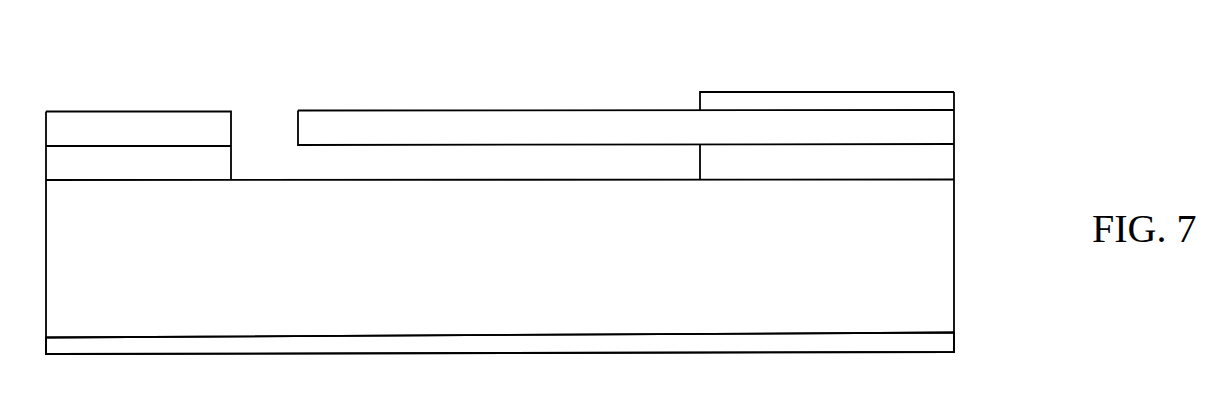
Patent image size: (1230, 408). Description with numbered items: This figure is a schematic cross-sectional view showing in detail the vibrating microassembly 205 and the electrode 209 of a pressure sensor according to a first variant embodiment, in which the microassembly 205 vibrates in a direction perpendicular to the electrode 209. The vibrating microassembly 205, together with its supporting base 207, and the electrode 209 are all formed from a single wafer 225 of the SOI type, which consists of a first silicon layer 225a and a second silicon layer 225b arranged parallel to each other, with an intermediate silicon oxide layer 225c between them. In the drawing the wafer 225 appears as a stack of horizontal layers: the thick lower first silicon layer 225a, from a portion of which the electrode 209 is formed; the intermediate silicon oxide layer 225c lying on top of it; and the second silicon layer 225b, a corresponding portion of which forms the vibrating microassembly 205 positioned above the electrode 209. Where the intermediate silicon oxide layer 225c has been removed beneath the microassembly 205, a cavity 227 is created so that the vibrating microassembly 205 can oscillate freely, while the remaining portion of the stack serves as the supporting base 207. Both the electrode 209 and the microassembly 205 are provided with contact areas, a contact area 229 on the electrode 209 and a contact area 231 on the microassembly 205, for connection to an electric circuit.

The wafer 225 is at (148, 104).
The first silicon layer 225a is at (928, 283).
The second silicon layer 225b is at (927, 130).
The intermediate silicon oxide layer 225c is at (932, 162).
The cavity 227 is at (453, 170).
The vibrating microassembly 205 is at (598, 134).
The contact area 231 is at (788, 100).
The supporting base 207 is at (823, 166).
The electrode 209 is at (679, 308).
The contact area 229 is at (533, 355).